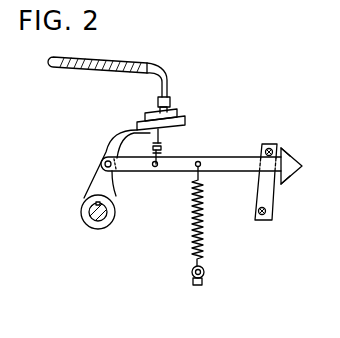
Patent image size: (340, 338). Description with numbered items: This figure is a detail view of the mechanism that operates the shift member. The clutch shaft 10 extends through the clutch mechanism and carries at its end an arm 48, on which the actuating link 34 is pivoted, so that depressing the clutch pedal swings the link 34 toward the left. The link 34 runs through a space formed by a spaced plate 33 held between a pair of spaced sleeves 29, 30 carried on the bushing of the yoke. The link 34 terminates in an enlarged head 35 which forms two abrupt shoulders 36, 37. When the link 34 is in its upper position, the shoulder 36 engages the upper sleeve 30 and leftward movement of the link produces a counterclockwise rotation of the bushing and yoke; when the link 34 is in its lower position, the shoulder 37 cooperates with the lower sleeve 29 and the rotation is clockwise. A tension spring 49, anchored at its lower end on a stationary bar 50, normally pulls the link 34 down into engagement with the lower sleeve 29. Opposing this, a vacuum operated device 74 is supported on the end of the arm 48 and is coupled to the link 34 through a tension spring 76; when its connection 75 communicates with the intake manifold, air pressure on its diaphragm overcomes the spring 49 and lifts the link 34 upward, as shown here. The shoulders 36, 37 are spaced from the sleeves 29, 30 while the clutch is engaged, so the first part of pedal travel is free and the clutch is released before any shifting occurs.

The clutch shaft 10 is at (92, 219).
The sleeve 29 is at (262, 222).
The sleeve 30 is at (266, 150).
The spaced plate 33 is at (255, 196).
The actuating link 34 is at (211, 157).
The enlarged head 35 is at (304, 166).
The abrupt shoulder 36 is at (283, 149).
The abrupt shoulder 37 is at (283, 180).
The arm 48 is at (93, 178).
The tension spring 49 is at (186, 237).
The stationary bar 50 is at (202, 284).
The vacuum operated device 74 is at (134, 117).
The connection 75 is at (159, 68).
The tension spring 76 is at (164, 147).